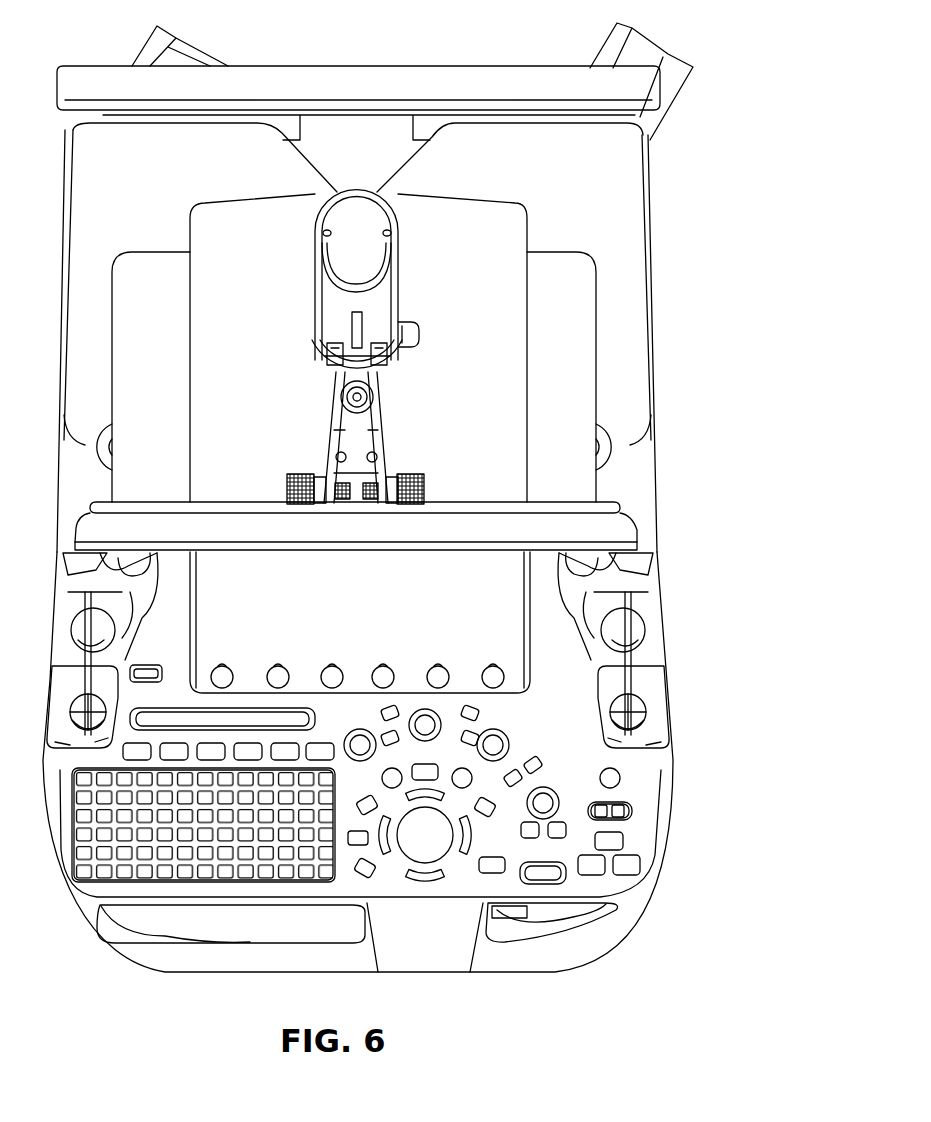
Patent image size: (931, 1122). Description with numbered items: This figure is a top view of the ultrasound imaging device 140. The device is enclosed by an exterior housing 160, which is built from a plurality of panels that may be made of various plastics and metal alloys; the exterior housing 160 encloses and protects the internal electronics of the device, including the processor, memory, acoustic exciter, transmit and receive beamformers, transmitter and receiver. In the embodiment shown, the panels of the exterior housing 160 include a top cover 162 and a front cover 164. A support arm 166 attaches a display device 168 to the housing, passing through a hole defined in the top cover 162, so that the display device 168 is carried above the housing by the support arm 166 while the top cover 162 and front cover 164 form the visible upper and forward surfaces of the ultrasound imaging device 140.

The ultrasound imaging device 140 is at (697, 158).
The exterior housing 160 is at (568, 352).
The top cover 162 is at (240, 236).
The front cover 164 is at (465, 590).
The support arm 166 is at (376, 303).
The display device 168 is at (620, 527).